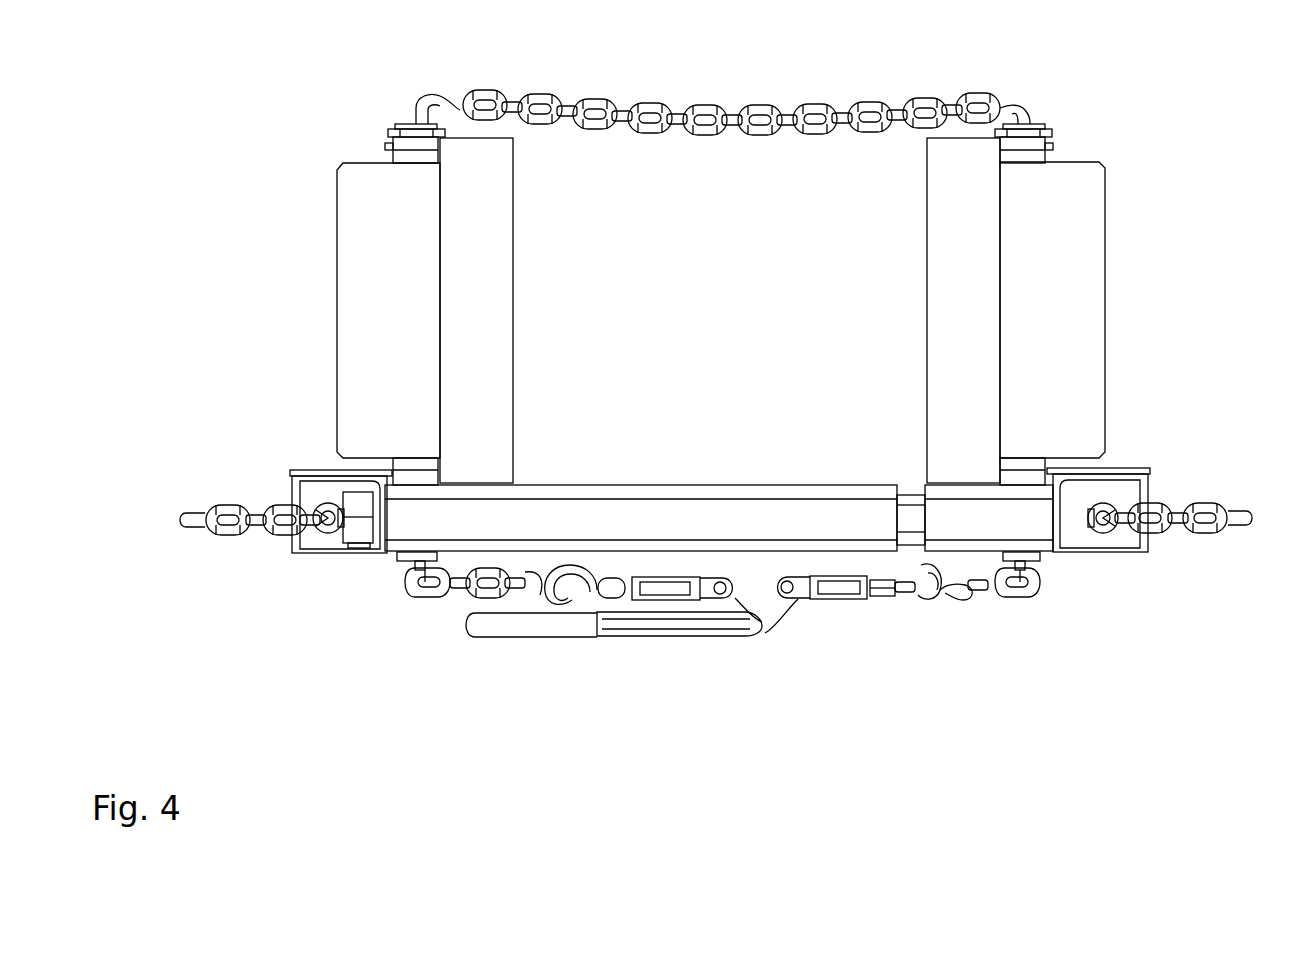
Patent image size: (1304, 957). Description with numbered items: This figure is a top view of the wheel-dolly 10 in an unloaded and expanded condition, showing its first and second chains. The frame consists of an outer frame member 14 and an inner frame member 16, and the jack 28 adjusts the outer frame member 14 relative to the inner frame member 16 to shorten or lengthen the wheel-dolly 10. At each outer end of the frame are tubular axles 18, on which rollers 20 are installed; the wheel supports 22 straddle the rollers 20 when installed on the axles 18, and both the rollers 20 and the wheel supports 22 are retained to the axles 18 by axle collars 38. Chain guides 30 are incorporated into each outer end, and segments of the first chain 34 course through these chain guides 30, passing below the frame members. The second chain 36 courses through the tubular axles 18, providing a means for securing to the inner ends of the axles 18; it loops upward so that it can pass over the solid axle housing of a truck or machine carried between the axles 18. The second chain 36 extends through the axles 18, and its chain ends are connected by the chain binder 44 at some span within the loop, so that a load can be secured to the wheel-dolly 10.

The wheel-dolly 10 is at (716, 683).
The outer frame member 14 is at (640, 485).
The inner frame member 16 is at (908, 497).
The axles 18 is at (402, 560).
The rollers 20 is at (337, 283).
The wheel supports 22 is at (515, 300).
The jack 28 is at (357, 546).
The chain guides 30 is at (340, 492).
The first chain 34 is at (200, 510).
The second chain 36 is at (707, 103).
The axle collars 38 is at (393, 130).
The chain binder 44 is at (762, 610).